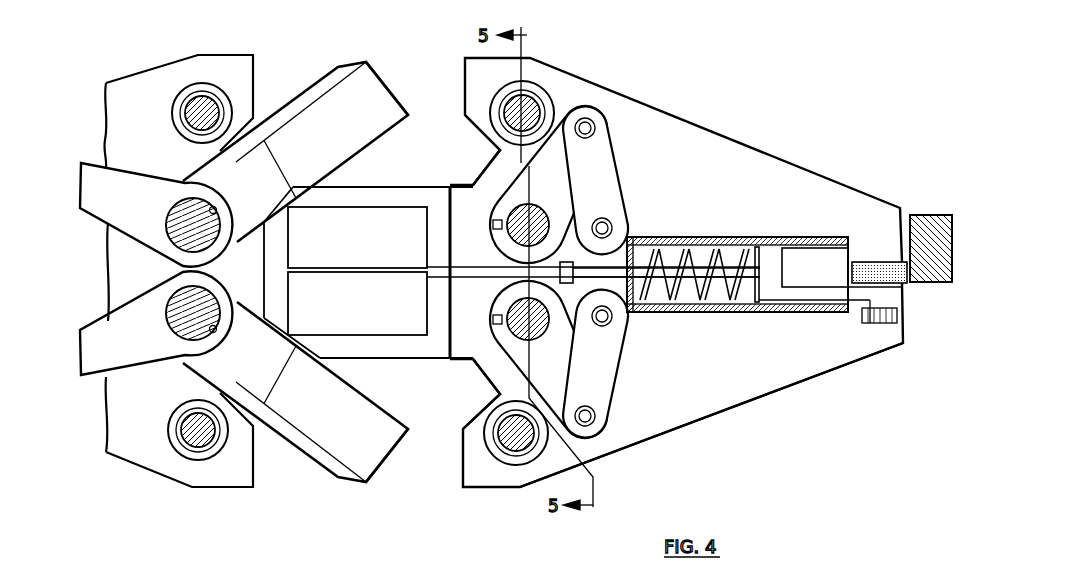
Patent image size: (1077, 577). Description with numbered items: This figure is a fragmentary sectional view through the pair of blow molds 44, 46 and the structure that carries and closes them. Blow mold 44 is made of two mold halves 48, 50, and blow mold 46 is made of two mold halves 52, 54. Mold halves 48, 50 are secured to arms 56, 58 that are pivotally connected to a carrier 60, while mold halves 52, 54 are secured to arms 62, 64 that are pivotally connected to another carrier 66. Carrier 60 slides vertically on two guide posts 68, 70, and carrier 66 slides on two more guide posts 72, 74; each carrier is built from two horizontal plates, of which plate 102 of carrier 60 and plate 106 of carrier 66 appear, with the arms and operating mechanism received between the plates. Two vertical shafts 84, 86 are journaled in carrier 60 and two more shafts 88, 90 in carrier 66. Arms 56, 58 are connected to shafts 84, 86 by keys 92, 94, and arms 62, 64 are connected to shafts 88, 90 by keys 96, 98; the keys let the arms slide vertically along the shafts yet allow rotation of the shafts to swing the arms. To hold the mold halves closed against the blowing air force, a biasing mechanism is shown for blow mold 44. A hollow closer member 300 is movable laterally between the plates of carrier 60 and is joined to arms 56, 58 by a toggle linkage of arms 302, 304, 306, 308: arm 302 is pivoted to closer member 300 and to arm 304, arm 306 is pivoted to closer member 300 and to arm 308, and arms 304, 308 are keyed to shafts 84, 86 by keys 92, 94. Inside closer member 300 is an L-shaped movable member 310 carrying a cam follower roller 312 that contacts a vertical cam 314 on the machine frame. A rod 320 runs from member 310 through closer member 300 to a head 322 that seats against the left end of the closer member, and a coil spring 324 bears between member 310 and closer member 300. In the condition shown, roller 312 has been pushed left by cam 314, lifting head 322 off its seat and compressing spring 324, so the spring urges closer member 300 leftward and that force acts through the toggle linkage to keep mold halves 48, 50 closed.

The blow mold 44 is at (512, 257).
The blow mold 46 is at (297, 131).
The mold half 48 is at (370, 238).
The mold half 50 is at (367, 315).
The mold half 52 is at (382, 83).
The mold half 54 is at (382, 448).
The arm 56 is at (467, 193).
The arm 58 is at (462, 347).
The carrier 60 is at (672, 272).
The arm 62 is at (248, 158).
The arm 64 is at (293, 392).
The carrier 66 is at (138, 470).
The guide post 68 is at (530, 107).
The guide post 70 is at (500, 425).
The guide post 72 is at (207, 100).
The guide post 74 is at (192, 427).
The vertical shaft 84 is at (508, 218).
The vertical shaft 86 is at (533, 327).
The vertical shaft 88 is at (173, 217).
The vertical shaft 90 is at (180, 325).
The key 92 is at (493, 228).
The key 94 is at (493, 319).
The key 96 is at (217, 208).
The key 98 is at (218, 336).
The horizontal plate 102 is at (778, 375).
The horizontal plate 106 is at (228, 481).
The closer member 300 is at (720, 308).
The arm 302 is at (615, 181).
The arm 304 is at (593, 148).
The arm 306 is at (613, 364).
The arm 308 is at (590, 393).
The movable member 310 is at (810, 293).
The cam follower roller 312 is at (897, 278).
The vertical cam 314 is at (925, 216).
The rod 320 is at (714, 267).
The head 322 is at (548, 215).
The coil spring 324 is at (672, 235).